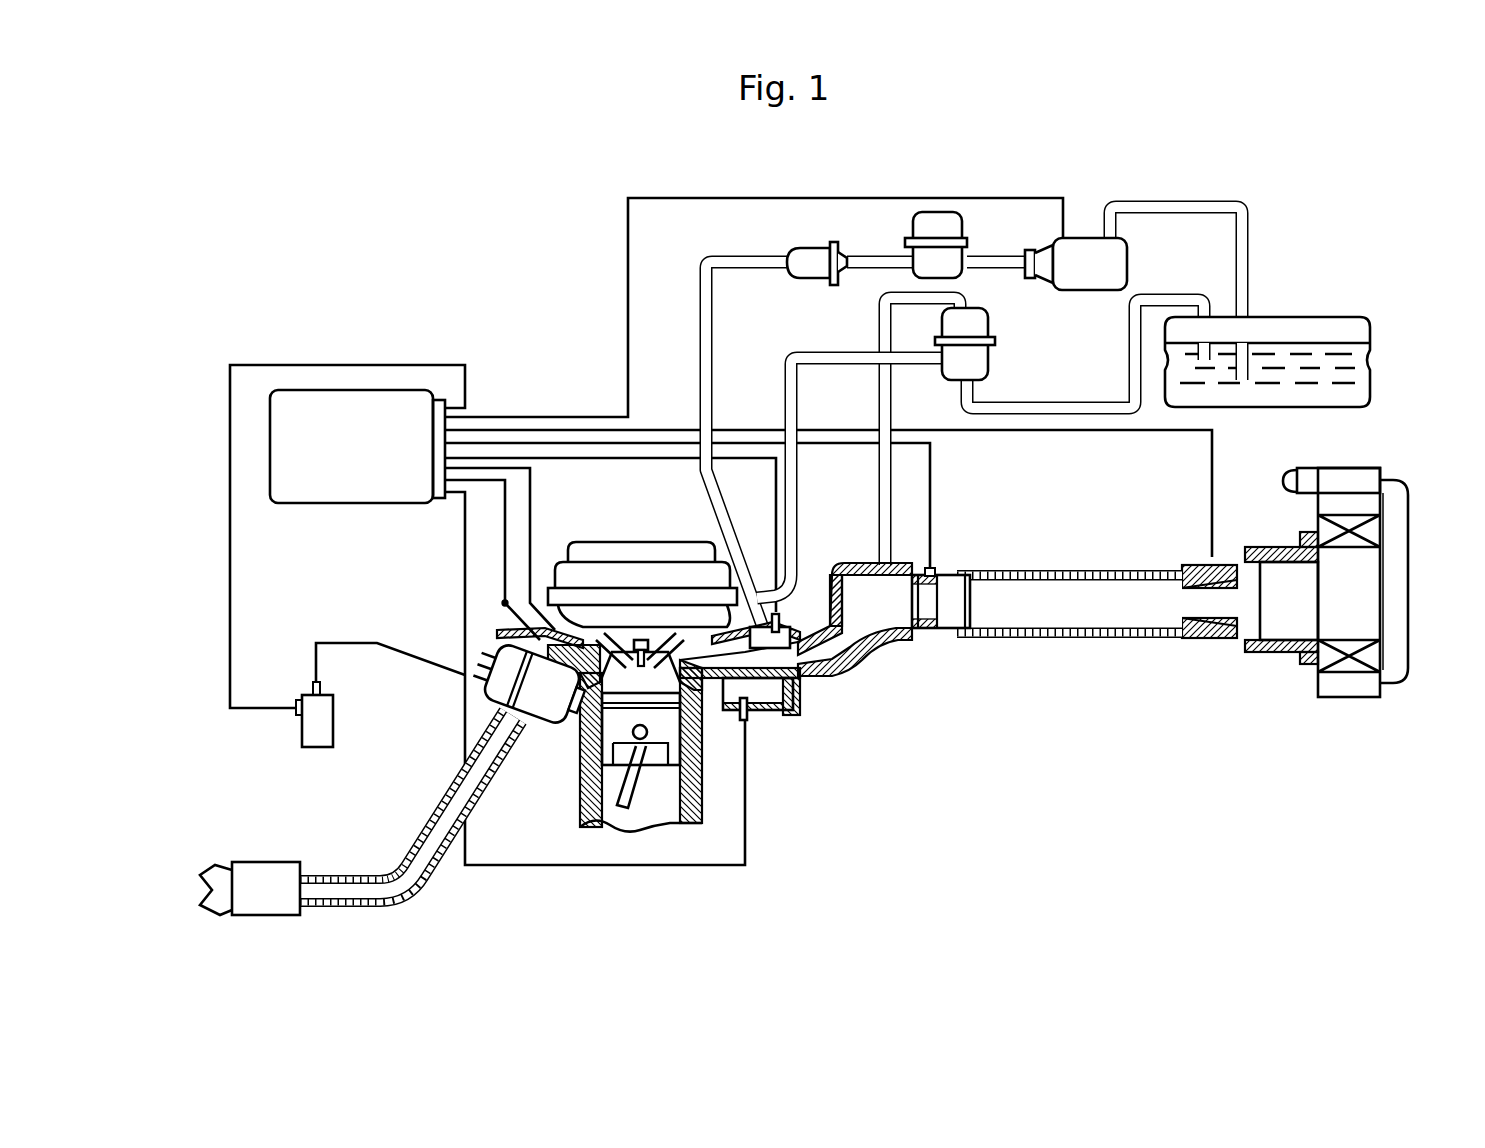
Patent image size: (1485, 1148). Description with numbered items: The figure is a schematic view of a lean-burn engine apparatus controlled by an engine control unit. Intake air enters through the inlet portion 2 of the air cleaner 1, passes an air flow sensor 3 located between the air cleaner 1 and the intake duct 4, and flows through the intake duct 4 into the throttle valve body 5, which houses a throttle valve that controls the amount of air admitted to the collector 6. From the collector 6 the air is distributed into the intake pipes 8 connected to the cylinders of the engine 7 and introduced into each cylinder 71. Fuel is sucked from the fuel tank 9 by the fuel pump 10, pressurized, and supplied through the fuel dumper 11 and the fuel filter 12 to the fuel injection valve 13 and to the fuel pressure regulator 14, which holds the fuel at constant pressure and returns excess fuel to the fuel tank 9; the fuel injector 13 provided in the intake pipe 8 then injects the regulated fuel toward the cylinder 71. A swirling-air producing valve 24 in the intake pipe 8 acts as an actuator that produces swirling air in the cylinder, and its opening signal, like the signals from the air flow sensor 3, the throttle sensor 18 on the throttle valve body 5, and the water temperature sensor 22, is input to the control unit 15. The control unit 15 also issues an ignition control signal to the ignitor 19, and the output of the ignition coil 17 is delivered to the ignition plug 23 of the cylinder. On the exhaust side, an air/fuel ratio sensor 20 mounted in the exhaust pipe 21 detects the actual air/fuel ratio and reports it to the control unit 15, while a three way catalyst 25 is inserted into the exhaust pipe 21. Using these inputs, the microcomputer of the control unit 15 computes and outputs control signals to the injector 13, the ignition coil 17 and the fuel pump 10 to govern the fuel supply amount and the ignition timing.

The air cleaner 1 is at (1347, 697).
The inlet portion 2 is at (1292, 466).
The air flow sensor 3 is at (1217, 640).
The intake duct 4 is at (1093, 638).
The throttle valve body 5 is at (935, 633).
The collector 6 is at (895, 615).
The engine 7 is at (600, 538).
The intake pipe 8 is at (777, 703).
The fuel tank 9 is at (1313, 317).
The fuel pump 10 is at (1075, 238).
The fuel dumper 11 is at (928, 212).
The fuel filter 12 is at (808, 247).
The fuel injection valve 13 is at (802, 608).
The fuel pressure regulator 14 is at (990, 357).
The control unit 15 is at (325, 504).
The ignition coil 17 is at (325, 748).
The throttle sensor 18 is at (947, 572).
The ignitor 19 is at (295, 717).
The air/fuel ratio sensor 20 is at (528, 632).
The exhaust pipe 21 is at (430, 883).
The water temperature sensor 22 is at (750, 720).
The ignition plug 23 is at (637, 640).
The swirling-air producing valve 24 is at (830, 672).
The three way catalyst 25 is at (277, 862).
The cylinder 71 is at (710, 712).